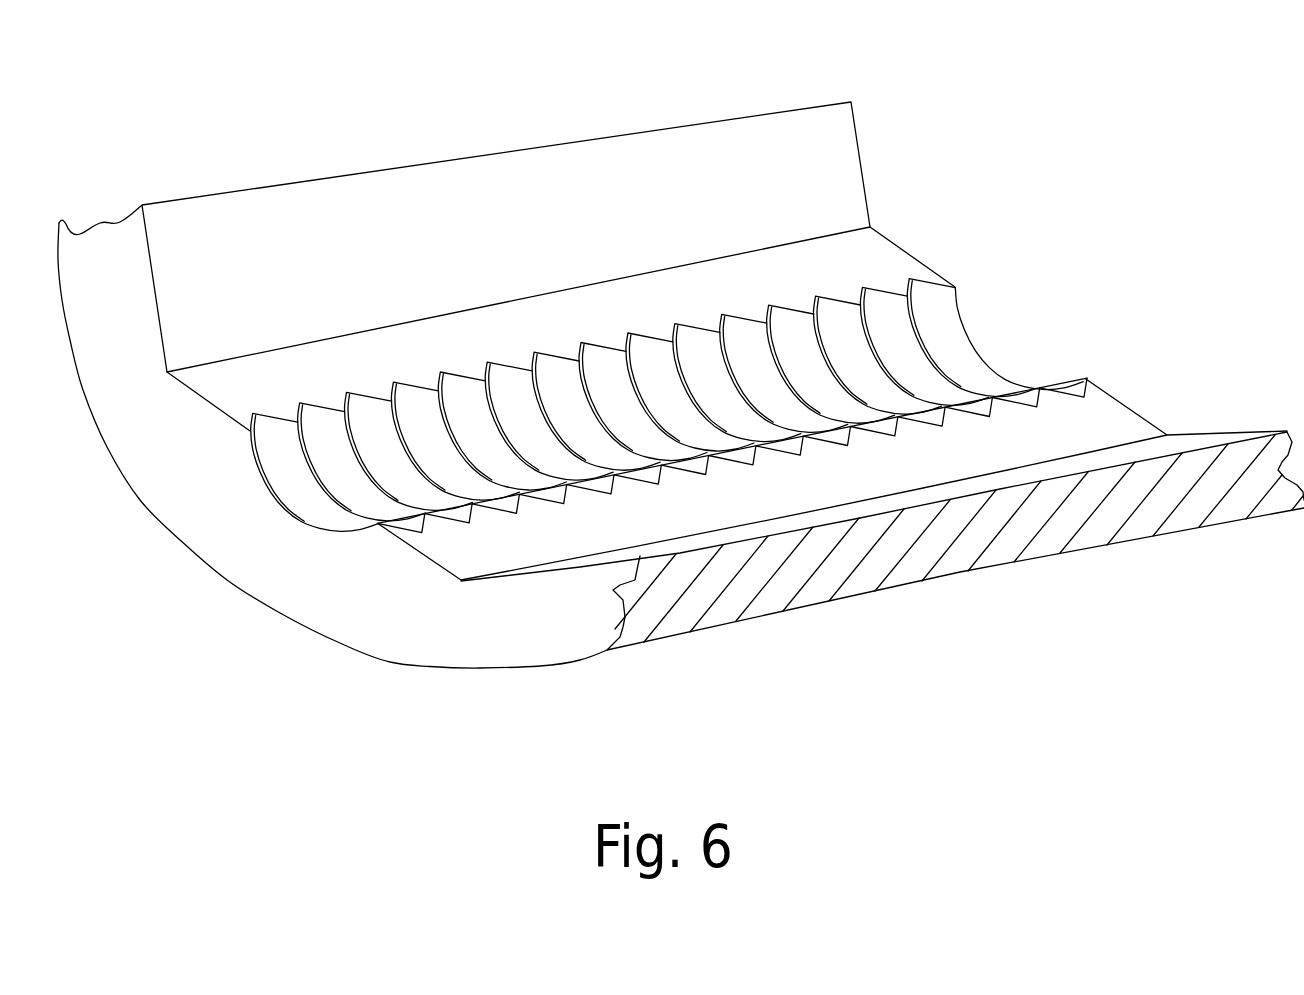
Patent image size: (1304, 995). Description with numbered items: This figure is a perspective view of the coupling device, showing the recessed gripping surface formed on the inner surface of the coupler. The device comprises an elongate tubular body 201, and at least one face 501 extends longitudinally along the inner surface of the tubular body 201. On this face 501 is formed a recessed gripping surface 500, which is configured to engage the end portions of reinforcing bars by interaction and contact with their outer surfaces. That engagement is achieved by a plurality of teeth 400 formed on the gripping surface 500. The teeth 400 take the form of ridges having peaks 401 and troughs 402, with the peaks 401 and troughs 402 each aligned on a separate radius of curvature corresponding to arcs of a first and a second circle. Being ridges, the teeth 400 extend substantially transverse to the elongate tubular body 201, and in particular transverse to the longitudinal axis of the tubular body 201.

The tubular body 201 is at (345, 618).
The teeth 400 is at (667, 276).
The peaks 401 is at (763, 322).
The troughs 402 is at (675, 325).
The gripping surface 500 is at (320, 530).
The face 501 is at (227, 223).